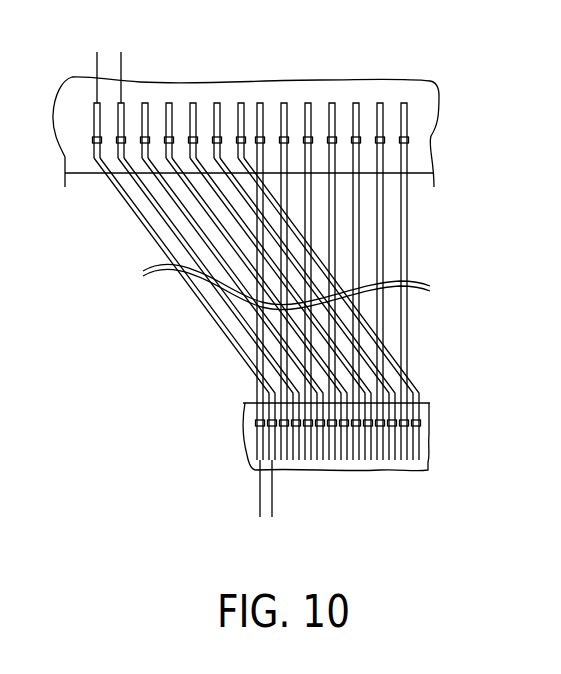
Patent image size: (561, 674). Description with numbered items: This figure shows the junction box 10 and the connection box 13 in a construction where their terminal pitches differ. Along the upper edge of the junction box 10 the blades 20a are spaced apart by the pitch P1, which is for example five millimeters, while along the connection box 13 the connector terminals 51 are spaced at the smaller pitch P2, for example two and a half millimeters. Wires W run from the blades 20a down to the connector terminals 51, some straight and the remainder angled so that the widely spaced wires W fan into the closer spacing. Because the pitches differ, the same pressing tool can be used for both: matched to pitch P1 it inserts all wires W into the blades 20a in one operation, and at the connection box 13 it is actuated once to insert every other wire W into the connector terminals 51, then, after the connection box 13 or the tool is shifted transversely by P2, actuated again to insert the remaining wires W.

The junction box 10 is at (424, 127).
The blades 20a is at (384, 137).
The wires W is at (410, 256).
The connection box 13 is at (430, 465).
The connector terminals 51 is at (258, 423).
The pitch P1 is at (173, 62).
The pitch P2 is at (310, 505).